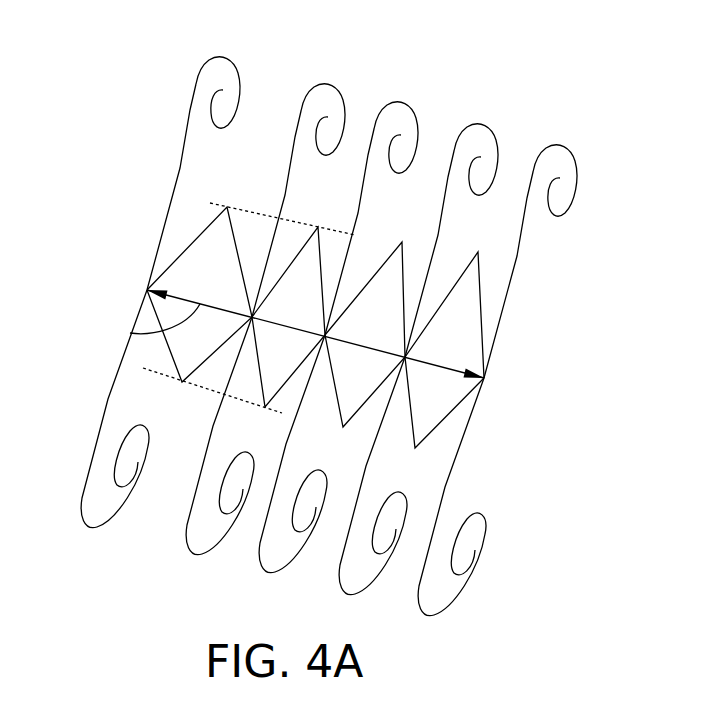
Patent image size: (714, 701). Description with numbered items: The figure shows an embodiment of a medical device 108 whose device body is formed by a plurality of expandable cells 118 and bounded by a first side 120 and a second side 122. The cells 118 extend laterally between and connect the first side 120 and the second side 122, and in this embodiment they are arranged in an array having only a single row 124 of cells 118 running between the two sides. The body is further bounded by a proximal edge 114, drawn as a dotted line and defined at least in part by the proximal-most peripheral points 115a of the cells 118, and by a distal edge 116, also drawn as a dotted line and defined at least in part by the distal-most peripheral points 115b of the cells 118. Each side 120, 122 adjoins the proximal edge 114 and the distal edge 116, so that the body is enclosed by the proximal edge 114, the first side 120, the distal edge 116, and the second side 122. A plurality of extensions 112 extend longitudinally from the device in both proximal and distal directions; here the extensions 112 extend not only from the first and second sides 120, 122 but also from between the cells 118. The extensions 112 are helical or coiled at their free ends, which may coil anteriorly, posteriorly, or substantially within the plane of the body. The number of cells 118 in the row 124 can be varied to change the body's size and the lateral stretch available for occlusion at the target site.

The medical device 108 is at (182, 69).
The extensions 112 is at (229, 58).
The first side 120 is at (185, 153).
The distal edge 116 is at (205, 200).
The proximal edge 114 is at (142, 386).
The expandable cells 118 is at (483, 298).
The row 124 is at (133, 328).
The second side 122 is at (472, 417).
The proximal-most peripheral points 115a is at (415, 448).
The distal-most peripheral points 115b is at (478, 252).